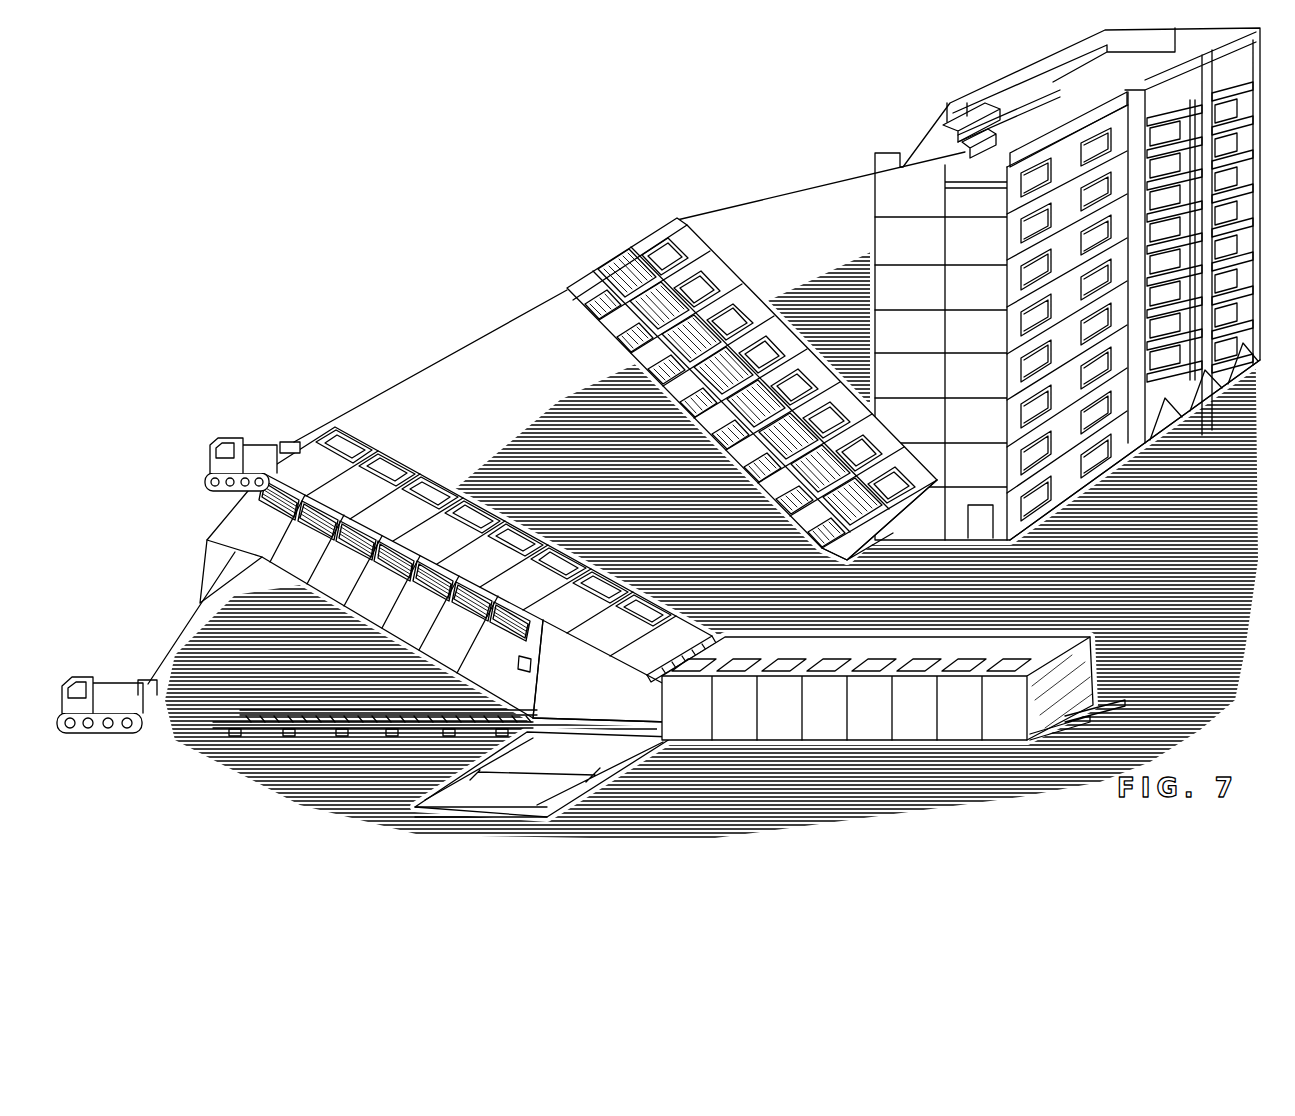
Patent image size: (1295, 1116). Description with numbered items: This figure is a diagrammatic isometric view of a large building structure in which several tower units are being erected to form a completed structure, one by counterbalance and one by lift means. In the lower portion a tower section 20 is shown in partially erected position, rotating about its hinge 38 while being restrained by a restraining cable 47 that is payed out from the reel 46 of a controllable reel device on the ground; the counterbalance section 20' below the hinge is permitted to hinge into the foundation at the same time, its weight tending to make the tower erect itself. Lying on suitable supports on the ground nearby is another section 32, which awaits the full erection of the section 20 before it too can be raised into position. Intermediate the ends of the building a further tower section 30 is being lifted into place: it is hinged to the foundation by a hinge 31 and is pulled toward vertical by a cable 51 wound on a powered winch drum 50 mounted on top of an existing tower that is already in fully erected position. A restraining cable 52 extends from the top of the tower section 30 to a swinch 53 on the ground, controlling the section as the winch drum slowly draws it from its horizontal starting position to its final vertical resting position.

The tower section 20 is at (458, 558).
The counterbalance section 20' is at (600, 671).
The tower section 30 is at (776, 302).
The hinge 31 is at (836, 553).
The section 32 is at (1096, 614).
The hinge 38 is at (524, 739).
The reel 46 is at (140, 682).
The restraining cable 47 is at (168, 636).
The winch drum 50 is at (958, 150).
The cable 51 is at (811, 187).
The restraining cable 52 is at (455, 351).
The swinch 53 is at (293, 436).